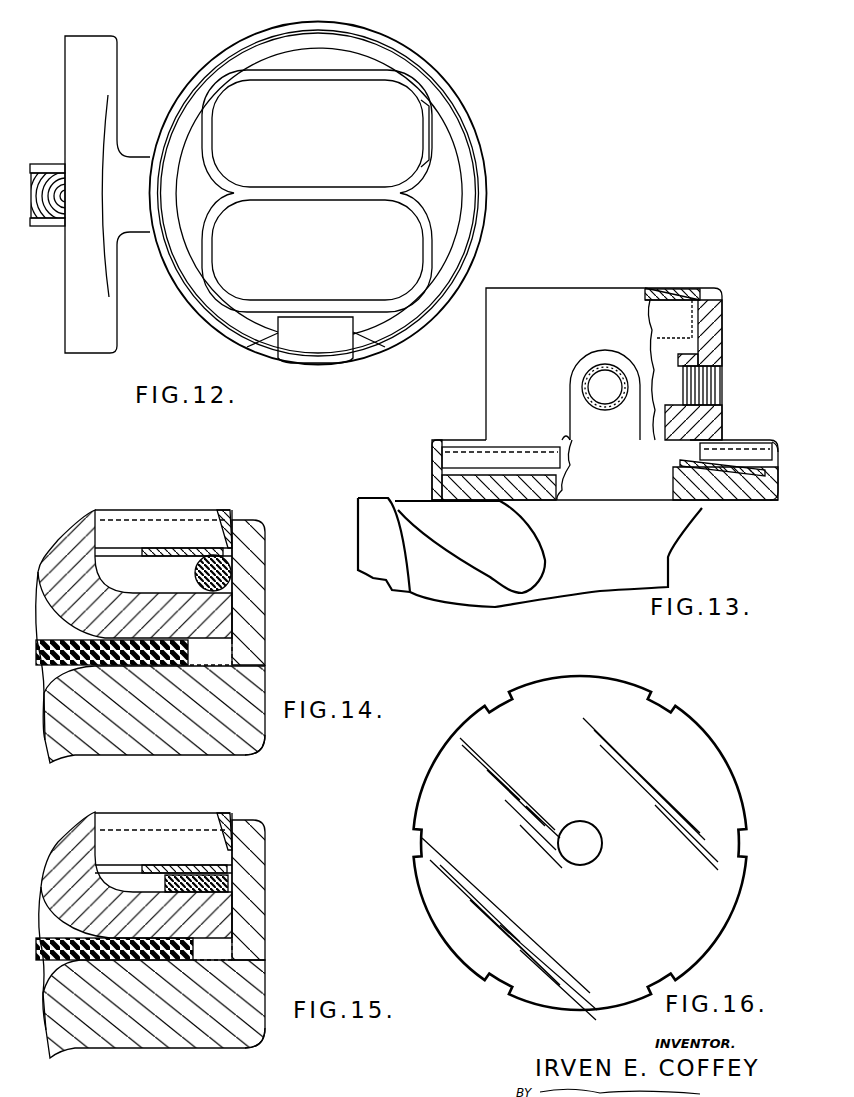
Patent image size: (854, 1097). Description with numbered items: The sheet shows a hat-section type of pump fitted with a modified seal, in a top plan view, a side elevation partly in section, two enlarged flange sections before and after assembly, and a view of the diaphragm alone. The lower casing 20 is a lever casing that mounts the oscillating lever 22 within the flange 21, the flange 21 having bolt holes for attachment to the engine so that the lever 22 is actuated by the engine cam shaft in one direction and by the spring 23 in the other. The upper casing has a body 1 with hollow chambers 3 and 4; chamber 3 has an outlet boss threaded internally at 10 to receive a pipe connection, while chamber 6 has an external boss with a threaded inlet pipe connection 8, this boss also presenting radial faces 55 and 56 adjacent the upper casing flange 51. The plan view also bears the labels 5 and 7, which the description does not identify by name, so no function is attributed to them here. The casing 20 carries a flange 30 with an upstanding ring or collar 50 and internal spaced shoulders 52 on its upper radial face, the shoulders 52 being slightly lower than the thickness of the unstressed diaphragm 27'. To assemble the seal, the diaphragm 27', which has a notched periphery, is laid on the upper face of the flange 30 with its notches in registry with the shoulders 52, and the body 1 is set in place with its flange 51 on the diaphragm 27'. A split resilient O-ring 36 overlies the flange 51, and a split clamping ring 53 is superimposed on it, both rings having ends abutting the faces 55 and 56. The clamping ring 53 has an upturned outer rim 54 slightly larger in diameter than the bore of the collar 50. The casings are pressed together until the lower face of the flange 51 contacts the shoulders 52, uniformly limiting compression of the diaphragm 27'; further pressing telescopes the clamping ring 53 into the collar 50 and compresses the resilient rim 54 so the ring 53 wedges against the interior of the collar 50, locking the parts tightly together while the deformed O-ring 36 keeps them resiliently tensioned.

In FIG. 13, the body 1 is at (485, 350).
In FIG. 12, the hollow chamber 3 is at (365, 70).
In FIG. 12, the hollow chamber 4 is at (434, 237).
In FIG. 12, the upper cavity 5 is at (317, 133).
In FIG. 12, the chamber 6 is at (317, 250).
In FIG. 12, the boss 7 is at (305, 352).
In FIG. 13, the boss 7 is at (611, 345).
In FIG. 13, the threaded inlet pipe connection 8 is at (587, 390).
In FIG. 13, the threaded outlet boss 10 is at (725, 385).
In FIG. 12, the lower casing 20 is at (143, 236).
In FIG. 13, the lower casing 20 is at (668, 560).
In FIG. 14, the lower casing 20 is at (52, 735).
In FIG. 15, the lower casing 20 is at (52, 1035).
In FIG. 12, the flange 21 is at (116, 338).
In FIG. 12, the oscillating lever 22 is at (48, 227).
In FIG. 12, the spring 23 is at (48, 178).
In FIG. 14, the diaphragm 27' is at (116, 575).
In FIG. 15, the diaphragm 27' is at (116, 876).
In FIG. 16, the diaphragm 27' is at (548, 848).
In FIG. 13, the flange 30 is at (442, 501).
In FIG. 14, the flange 30 is at (255, 740).
In FIG. 15, the flange 30 is at (253, 1030).
In FIG. 13, the split resilient O-ring 36 is at (778, 448).
In FIG. 14, the split resilient O-ring 36 is at (233, 578).
In FIG. 15, the split resilient O-ring 36 is at (232, 885).
In FIG. 12, the upstanding ring or collar 50 is at (475, 131).
In FIG. 13, the upstanding ring or collar 50 is at (432, 449).
In FIG. 14, the upstanding ring or collar 50 is at (266, 552).
In FIG. 15, the upstanding ring or collar 50 is at (266, 858).
In FIG. 12, the flange 51 is at (440, 251).
In FIG. 13, the flange 51 is at (508, 456).
In FIG. 14, the flange 51 is at (130, 590).
In FIG. 15, the flange 51 is at (130, 885).
In FIG. 14, the internal spaced shoulders 52 is at (207, 651).
In FIG. 15, the internal spaced shoulders 52 is at (208, 945).
In FIG. 13, the split clamping ring 53 is at (468, 440).
In FIG. 14, the split clamping ring 53 is at (177, 556).
In FIG. 15, the split clamping ring 53 is at (170, 870).
In FIG. 14, the upturned outer rim 54 is at (233, 515).
In FIG. 15, the upturned outer rim 54 is at (227, 815).
In FIG. 12, the radial face 55 is at (265, 343).
In FIG. 13, the radial face 55 is at (565, 440).
In FIG. 12, the radial face 56 is at (378, 338).